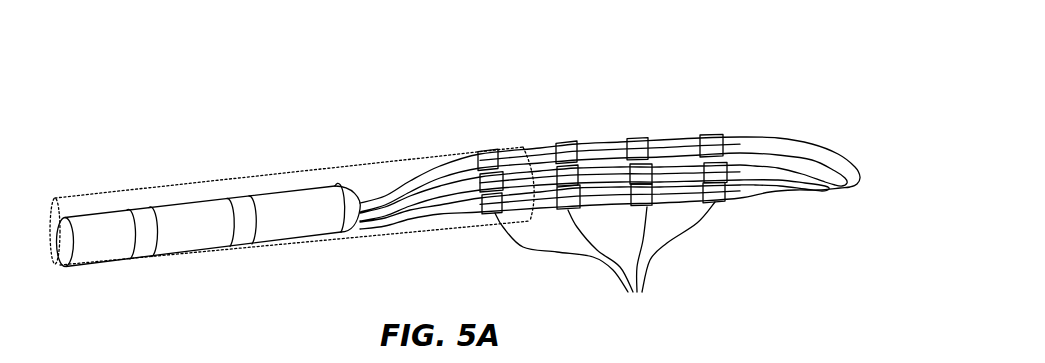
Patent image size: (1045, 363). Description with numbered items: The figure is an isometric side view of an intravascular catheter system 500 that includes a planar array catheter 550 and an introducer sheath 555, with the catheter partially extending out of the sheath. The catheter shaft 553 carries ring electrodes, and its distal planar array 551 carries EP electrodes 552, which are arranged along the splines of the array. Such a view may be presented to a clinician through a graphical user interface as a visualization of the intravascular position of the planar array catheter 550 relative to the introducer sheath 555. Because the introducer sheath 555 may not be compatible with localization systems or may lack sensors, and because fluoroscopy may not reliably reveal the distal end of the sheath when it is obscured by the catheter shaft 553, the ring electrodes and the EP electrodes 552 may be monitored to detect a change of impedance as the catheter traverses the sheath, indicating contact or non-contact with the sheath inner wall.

The intravascular catheter system 500 is at (367, 98).
The planar array catheter 550 is at (639, 202).
The planar array 551 is at (814, 136).
The EP electrodes 552 is at (602, 229).
The catheter shaft 553 is at (209, 227).
The introducer sheath 555 is at (107, 184).